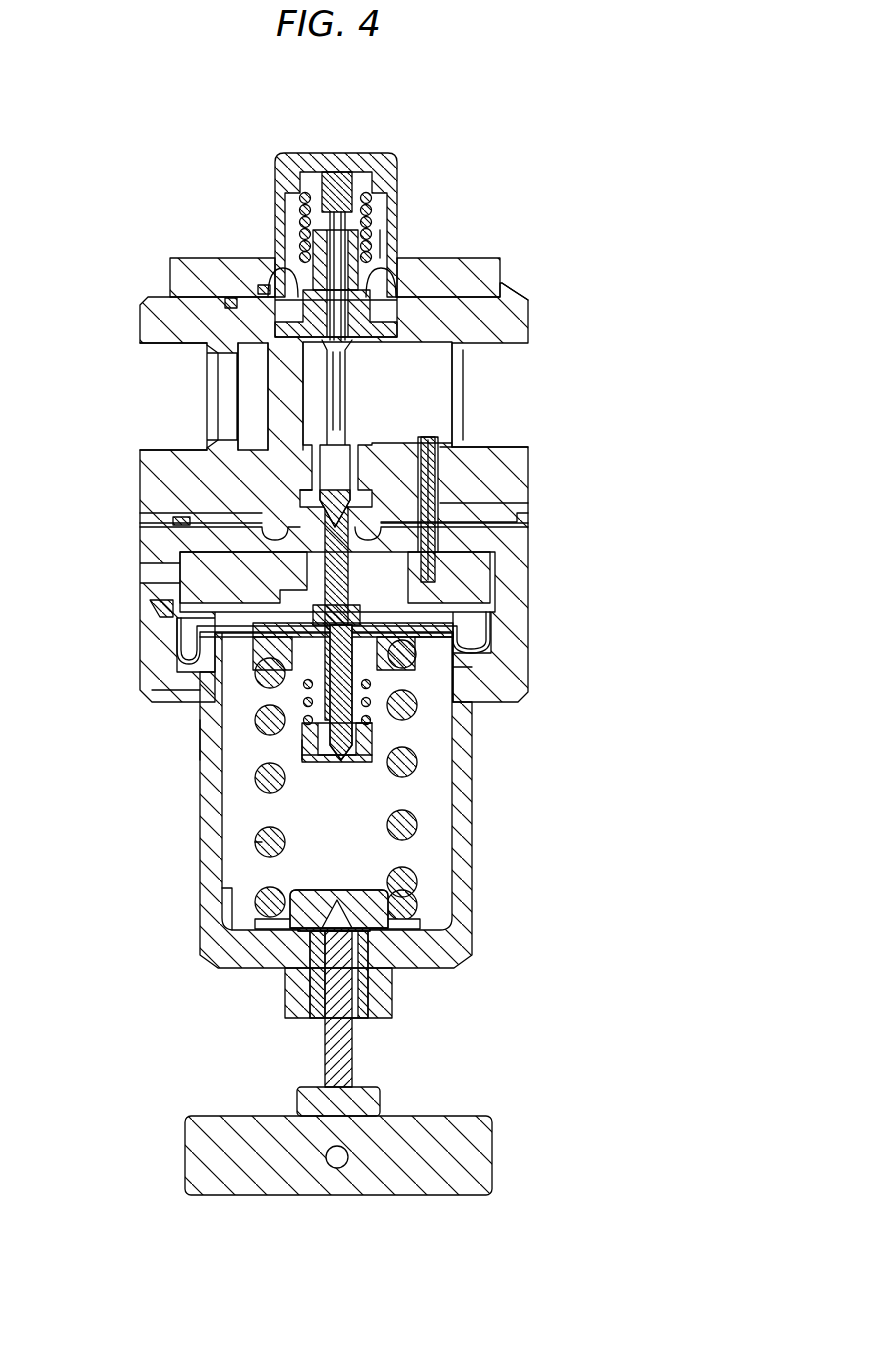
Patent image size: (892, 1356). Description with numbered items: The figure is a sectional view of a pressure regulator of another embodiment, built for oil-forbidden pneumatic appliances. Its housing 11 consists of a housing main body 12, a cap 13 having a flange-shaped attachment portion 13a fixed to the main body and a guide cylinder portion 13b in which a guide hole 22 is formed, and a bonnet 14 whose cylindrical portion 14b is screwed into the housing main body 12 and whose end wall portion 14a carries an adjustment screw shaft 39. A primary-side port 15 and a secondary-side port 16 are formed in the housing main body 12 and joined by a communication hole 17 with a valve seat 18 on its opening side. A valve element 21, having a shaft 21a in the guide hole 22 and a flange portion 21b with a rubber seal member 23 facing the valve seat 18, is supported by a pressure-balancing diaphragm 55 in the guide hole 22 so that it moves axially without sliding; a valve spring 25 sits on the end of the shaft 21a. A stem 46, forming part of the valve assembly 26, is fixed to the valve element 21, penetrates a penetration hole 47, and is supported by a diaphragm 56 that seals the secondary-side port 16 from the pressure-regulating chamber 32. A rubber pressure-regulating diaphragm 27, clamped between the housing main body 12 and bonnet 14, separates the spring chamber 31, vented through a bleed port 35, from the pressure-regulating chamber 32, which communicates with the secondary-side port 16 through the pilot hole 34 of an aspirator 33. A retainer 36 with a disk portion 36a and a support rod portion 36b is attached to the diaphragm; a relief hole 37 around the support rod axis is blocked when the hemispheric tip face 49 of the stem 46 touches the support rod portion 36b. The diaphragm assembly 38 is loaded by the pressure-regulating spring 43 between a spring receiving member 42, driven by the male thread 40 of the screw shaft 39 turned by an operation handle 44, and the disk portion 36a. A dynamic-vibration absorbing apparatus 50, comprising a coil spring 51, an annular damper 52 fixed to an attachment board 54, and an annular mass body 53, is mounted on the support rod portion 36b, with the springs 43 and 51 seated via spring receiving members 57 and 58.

The housing 11 is at (519, 279).
The housing main body 12 is at (512, 308).
The cap 13 is at (378, 165).
The flange-shaped attachment portion 13a is at (192, 275).
The guide cylinder portion 13b is at (400, 225).
The bonnet 14 is at (460, 825).
The end wall portion 14a is at (432, 950).
The cylindrical portion 14b is at (210, 740).
The primary-side port 15 is at (160, 398).
The secondary-side port 16 is at (510, 395).
The communication hole 17 is at (272, 412).
The valve seat 18 is at (272, 362).
The valve element 21 is at (283, 285).
The shaft 21a is at (392, 235).
The flange portion 21b is at (415, 330).
The guide hole 22 is at (366, 192).
The seal member 23 is at (458, 370).
The valve spring 25 is at (297, 247).
The valve assembly 26 is at (293, 205).
The pressure-regulating diaphragm 27 is at (468, 622).
The spring chamber 31 is at (430, 795).
The pressure-regulating chamber 32 is at (205, 608).
The aspirator 33 is at (437, 476).
The pilot hole 34 is at (435, 503).
The bleed port 35 is at (215, 873).
The retainer 36 is at (513, 698).
The disk portion 36a is at (452, 627).
The support rod portion 36b is at (395, 583).
The relief hole 37 is at (340, 735).
The diaphragm assembly 38 is at (418, 820).
The adjustment screw shaft 39 is at (352, 1102).
The male thread 40 is at (330, 1045).
The spring receiving member 42 is at (305, 905).
The pressure-regulating spring 43 is at (265, 842).
The operation handle 44 is at (433, 1157).
The stem 46 is at (400, 428).
The penetration hole 47 is at (300, 480).
The tip face 49 is at (190, 650).
The dynamic-vibration absorbing apparatus 50 is at (372, 748).
The coil spring 51 is at (308, 712).
The annular damper 52 is at (368, 740).
The annular mass body 53 is at (388, 735).
The attachment board 54 is at (305, 763).
The pressure-balancing diaphragm 55 is at (264, 287).
The diaphragm 56 is at (280, 518).
The spring receiving member 57 is at (195, 622).
The spring receiving member 58 is at (200, 688).